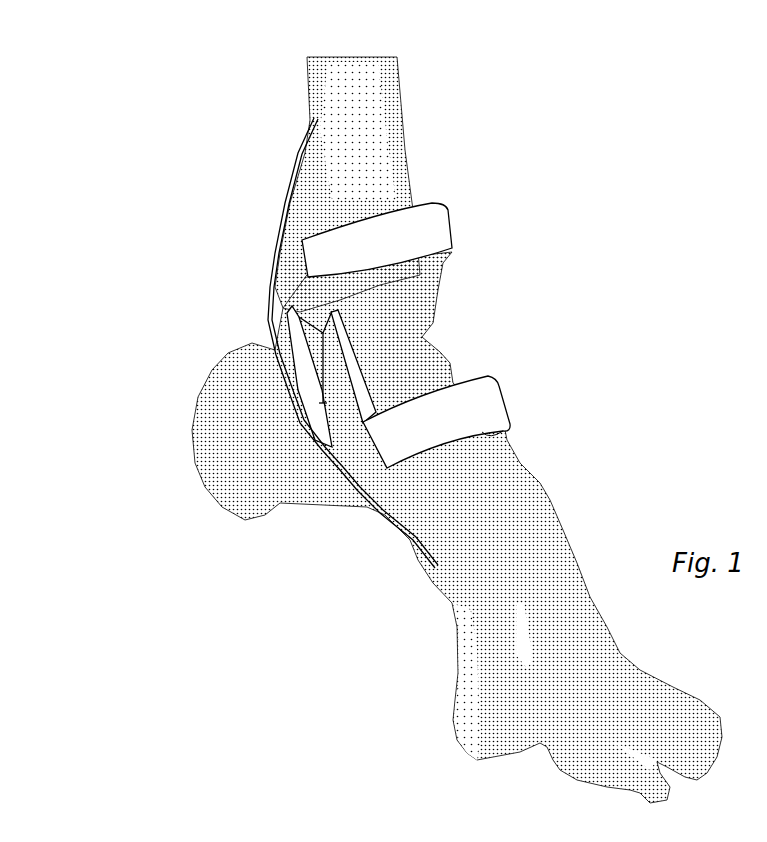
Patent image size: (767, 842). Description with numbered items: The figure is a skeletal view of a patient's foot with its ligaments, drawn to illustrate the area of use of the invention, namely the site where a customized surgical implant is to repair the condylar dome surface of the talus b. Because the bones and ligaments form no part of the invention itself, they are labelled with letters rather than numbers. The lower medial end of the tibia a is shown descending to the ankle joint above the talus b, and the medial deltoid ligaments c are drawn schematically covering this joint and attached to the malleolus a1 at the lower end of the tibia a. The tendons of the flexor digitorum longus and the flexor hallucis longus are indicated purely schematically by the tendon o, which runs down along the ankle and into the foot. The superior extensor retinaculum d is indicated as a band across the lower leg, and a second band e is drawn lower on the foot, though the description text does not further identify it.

The tibia a is at (370, 177).
The malleolus a1 is at (297, 283).
The talus b is at (400, 350).
The medial deltoid ligaments c is at (360, 390).
The superior extensor retinaculum d is at (415, 242).
The lower strap band e is at (460, 405).
The tendons of the flexor digitorum longus and the flexor hallucis longus o is at (273, 320).